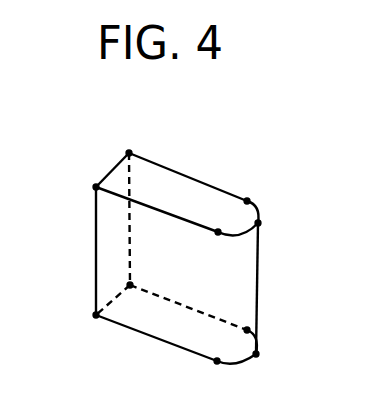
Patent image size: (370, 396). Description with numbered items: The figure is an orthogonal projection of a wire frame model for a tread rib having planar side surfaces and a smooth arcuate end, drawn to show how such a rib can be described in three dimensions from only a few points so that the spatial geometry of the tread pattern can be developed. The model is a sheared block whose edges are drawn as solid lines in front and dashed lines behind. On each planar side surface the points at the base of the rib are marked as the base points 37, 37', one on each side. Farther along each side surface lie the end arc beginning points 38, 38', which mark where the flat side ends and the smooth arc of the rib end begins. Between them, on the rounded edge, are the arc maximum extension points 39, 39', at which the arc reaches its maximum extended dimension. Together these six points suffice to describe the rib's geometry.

The side surface base point 37 is at (81, 307).
The side surface base point 37' is at (97, 149).
The end arc beginning point 38 is at (267, 321).
The end arc beginning point 38' is at (256, 185).
The arc maximum extension point 39 is at (272, 361).
The arc maximum extension point 39' is at (273, 229).